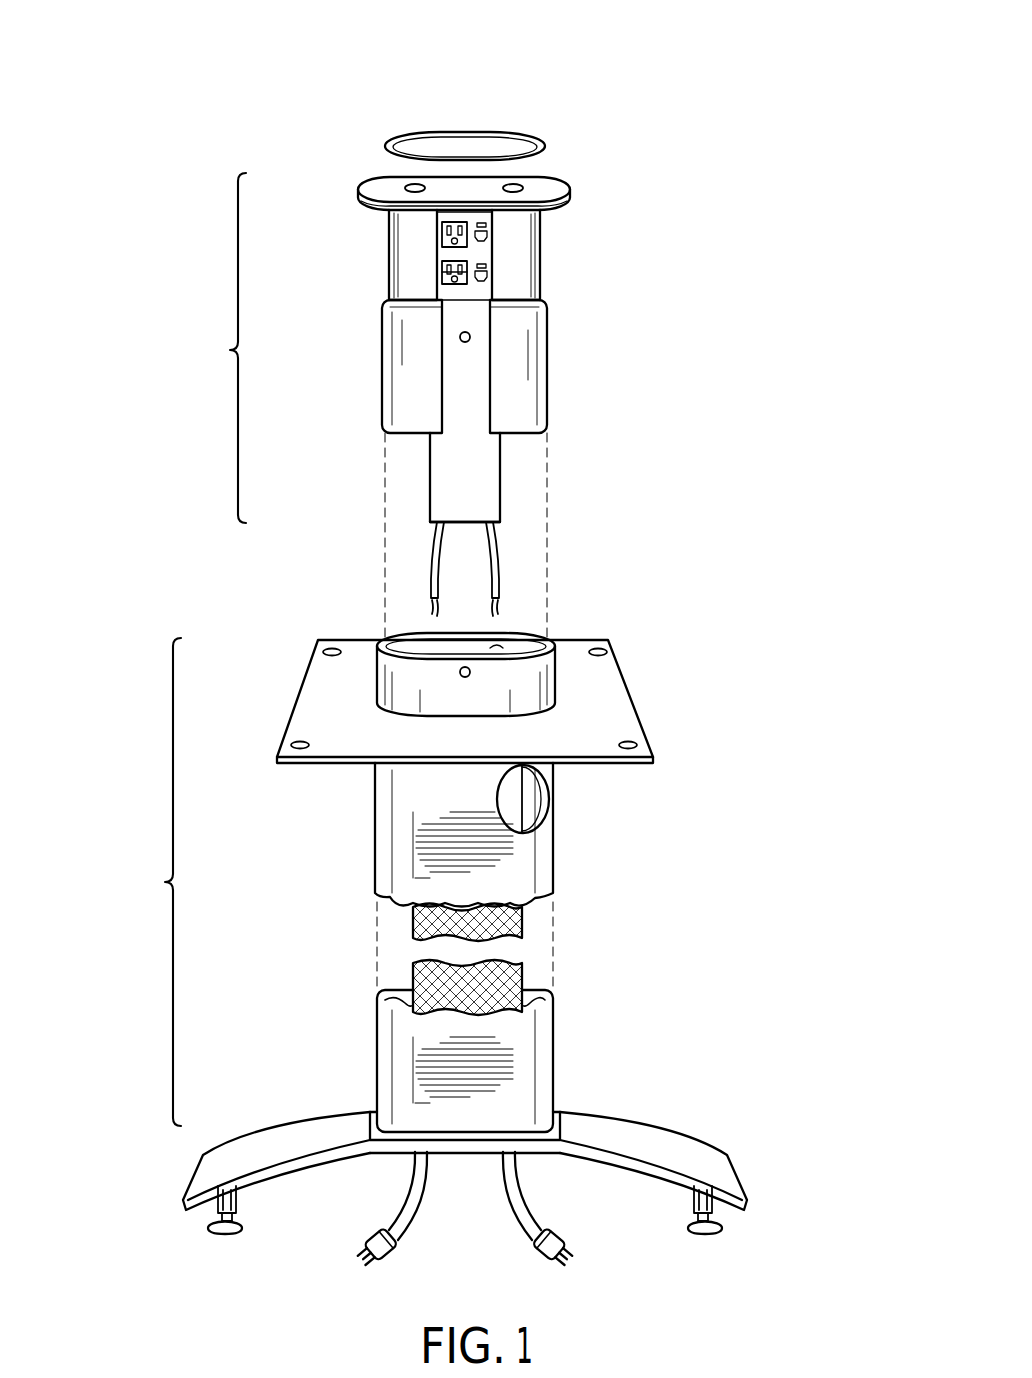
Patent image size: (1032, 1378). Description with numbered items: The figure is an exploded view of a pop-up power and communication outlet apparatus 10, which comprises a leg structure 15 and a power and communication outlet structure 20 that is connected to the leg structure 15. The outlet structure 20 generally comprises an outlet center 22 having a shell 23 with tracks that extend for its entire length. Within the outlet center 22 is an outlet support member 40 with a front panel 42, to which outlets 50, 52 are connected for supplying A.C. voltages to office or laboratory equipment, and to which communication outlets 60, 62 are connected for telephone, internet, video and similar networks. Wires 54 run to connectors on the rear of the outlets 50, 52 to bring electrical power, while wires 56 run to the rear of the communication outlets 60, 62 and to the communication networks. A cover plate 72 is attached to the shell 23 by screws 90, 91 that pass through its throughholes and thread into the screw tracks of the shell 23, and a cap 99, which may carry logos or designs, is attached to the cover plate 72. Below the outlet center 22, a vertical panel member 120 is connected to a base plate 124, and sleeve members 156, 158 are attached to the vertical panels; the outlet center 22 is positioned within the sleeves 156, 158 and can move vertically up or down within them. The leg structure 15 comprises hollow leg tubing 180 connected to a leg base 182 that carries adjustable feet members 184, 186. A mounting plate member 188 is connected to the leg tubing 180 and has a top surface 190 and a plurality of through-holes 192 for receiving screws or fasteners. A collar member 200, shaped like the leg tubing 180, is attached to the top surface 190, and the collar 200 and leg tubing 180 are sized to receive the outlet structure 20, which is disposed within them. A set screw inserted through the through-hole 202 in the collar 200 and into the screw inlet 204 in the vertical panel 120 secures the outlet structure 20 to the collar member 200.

The power and communication outlet apparatus 10 is at (655, 99).
The leg structure 15 is at (155, 882).
The power and communication outlet structure 20 is at (221, 348).
The outlet center 22 is at (387, 242).
The shell 23 is at (543, 257).
The outlet support member 40 is at (440, 253).
The front panel 42 is at (483, 290).
The outlet 50 is at (437, 232).
The outlet 52 is at (440, 273).
The wires 54 is at (432, 562).
The wires 56 is at (497, 560).
The communication outlet 60 is at (483, 227).
The communication outlet 62 is at (488, 236).
The cover plate 72 is at (360, 182).
The screw 90 is at (410, 186).
The screw 91 is at (520, 186).
The cap 99 is at (498, 132).
The vertical panel member 120 is at (445, 462).
The base plate 124 is at (430, 520).
The sleeve member 156 is at (380, 405).
The sleeve member 158 is at (550, 397).
The hollow leg tubing 180 is at (375, 849).
The leg base 182 is at (615, 1127).
The adjustable feet member 184 is at (226, 1235).
The adjustable feet member 186 is at (720, 1225).
The mounting plate member 188 is at (330, 768).
The top surface 190 is at (288, 729).
The through-holes 192 is at (331, 650).
The collar member 200 is at (493, 648).
The through-hole 202 is at (462, 675).
The screw inlet 204 is at (460, 337).